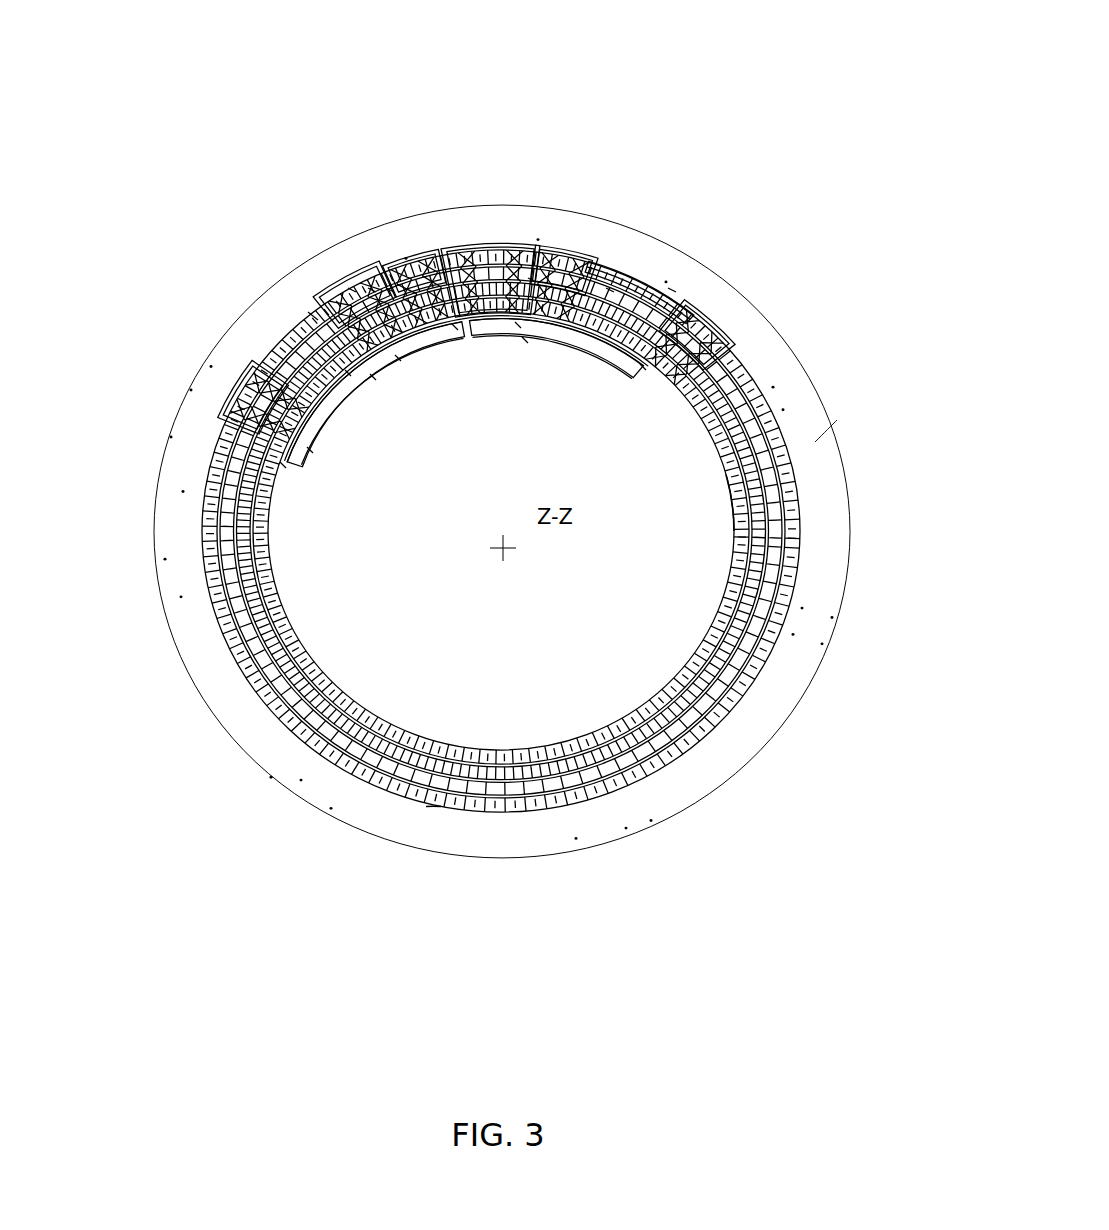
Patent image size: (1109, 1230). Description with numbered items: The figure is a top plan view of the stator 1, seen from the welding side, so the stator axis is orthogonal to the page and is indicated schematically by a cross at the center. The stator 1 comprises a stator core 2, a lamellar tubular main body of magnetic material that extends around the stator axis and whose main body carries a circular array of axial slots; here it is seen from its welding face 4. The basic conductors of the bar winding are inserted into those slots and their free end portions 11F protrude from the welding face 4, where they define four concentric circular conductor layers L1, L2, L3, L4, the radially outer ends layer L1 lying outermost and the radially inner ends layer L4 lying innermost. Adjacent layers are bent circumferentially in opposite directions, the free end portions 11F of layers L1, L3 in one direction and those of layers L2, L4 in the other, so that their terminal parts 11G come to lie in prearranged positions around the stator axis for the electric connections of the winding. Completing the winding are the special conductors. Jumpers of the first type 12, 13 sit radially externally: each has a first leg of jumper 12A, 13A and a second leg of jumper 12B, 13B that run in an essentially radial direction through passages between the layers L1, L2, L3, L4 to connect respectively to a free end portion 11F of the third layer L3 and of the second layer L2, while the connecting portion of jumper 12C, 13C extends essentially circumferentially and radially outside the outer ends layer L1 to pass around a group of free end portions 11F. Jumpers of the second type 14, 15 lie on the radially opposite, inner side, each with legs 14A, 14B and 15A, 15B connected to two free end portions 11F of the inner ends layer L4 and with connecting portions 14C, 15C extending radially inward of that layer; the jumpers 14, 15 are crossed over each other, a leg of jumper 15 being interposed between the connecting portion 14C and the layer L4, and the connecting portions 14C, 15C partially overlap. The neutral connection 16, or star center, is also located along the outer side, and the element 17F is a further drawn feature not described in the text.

The stator 1 is at (712, 112).
The stator core 2 is at (848, 590).
The welding face 4 is at (815, 442).
The free end portions 11F is at (717, 712).
The terminal parts 11G is at (437, 797).
The jumper of the first type 12 is at (230, 392).
The first leg of jumper 12A is at (390, 290).
The second leg of jumper 12B is at (313, 317).
The connecting portion of jumper 12C is at (352, 290).
The jumper of the first type 13 is at (408, 255).
The first leg of jumper 13A is at (672, 290).
The second leg of jumper 13B is at (532, 280).
The connecting portion of jumper 13C is at (610, 290).
The jumper of the second type 14 is at (438, 350).
The leg of jumper 14A is at (518, 325).
The leg of jumper 14B is at (348, 373).
The connecting portion of jumper 14C is at (398, 358).
The jumper of the second type 15 is at (332, 428).
The leg of jumper 15A is at (373, 377).
The leg of jumper 15B is at (283, 465).
The connecting portion of jumper 15C is at (310, 450).
The neutral connection 16 is at (667, 280).
The lead wire 17F is at (372, 290).
The radially outer ends layer L1 is at (233, 657).
The conductor layer L2 is at (243, 632).
The conductor layer L3 is at (253, 605).
The radially inner ends layer L4 is at (260, 577).